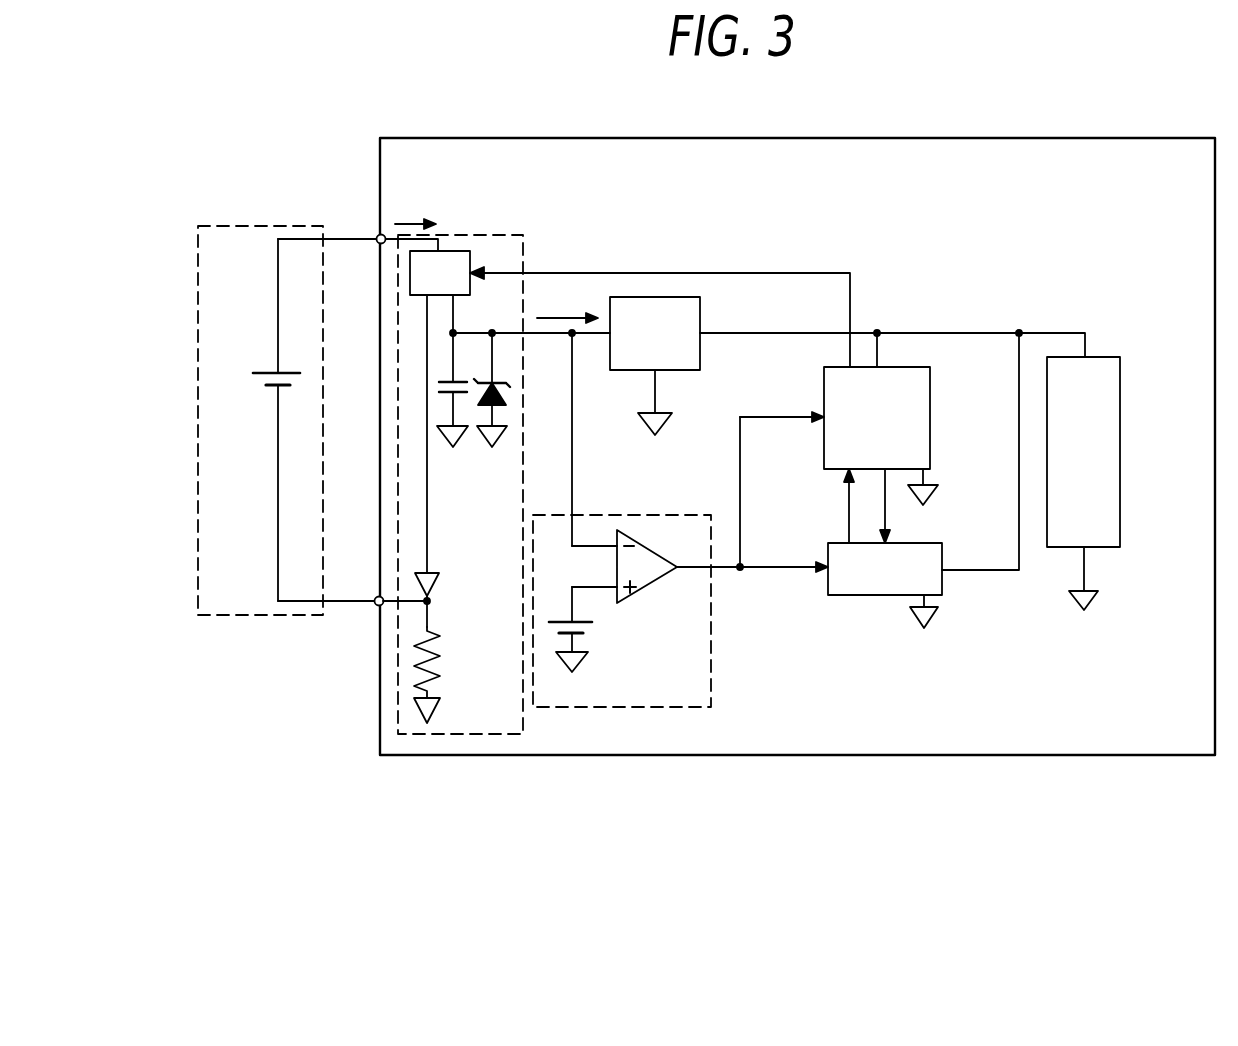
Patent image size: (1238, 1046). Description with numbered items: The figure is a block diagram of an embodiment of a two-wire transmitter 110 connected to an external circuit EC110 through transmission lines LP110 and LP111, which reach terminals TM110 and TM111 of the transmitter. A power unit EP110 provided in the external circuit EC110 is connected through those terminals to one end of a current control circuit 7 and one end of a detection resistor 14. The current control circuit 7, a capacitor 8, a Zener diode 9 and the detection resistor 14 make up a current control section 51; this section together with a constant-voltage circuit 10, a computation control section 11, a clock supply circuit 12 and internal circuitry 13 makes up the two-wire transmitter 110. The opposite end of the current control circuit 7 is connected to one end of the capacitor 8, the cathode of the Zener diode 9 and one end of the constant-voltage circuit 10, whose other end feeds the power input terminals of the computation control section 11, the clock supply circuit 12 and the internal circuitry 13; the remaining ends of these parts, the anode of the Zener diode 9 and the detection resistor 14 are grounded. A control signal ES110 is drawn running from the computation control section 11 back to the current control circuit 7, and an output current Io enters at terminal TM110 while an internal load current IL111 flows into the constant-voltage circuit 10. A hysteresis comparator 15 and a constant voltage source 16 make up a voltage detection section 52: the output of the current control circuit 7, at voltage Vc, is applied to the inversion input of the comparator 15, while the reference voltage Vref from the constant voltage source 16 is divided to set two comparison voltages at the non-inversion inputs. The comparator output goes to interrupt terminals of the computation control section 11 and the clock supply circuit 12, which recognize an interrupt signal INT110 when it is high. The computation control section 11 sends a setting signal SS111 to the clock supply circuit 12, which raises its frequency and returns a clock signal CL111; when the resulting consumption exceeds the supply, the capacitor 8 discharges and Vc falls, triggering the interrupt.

The current control circuit 7 is at (462, 251).
The capacitor 8 is at (438, 385).
The Zener diode 9 is at (506, 391).
The constant-voltage circuit 10 is at (655, 297).
The computation control section 11 is at (912, 367).
The clock supply circuit 12 is at (867, 596).
The internal circuitry 13 is at (1068, 548).
The detection resistor 14 is at (443, 660).
The hysteresis comparator 15 is at (648, 547).
The constant voltage source 16 is at (590, 630).
The current control section 51 is at (500, 738).
The voltage detection section 52 is at (633, 710).
The two-wire transmitter 110 is at (983, 757).
The terminal TM110 is at (378, 236).
The terminal TM111 is at (376, 606).
The transmission line LP110 is at (350, 239).
The transmission line LP111 is at (352, 603).
The power unit EP110 is at (256, 383).
The external circuit EC110 is at (196, 562).
The output current Io is at (415, 208).
The current consumption IL111 is at (567, 302).
The voltage Vc is at (555, 439).
The reference voltage Vref is at (617, 662).
The control signal ES110 is at (827, 245).
The interrupt signal INT110 is at (690, 568).
The clock signal CL111 is at (849, 530).
The setting signal SS111 is at (888, 516).